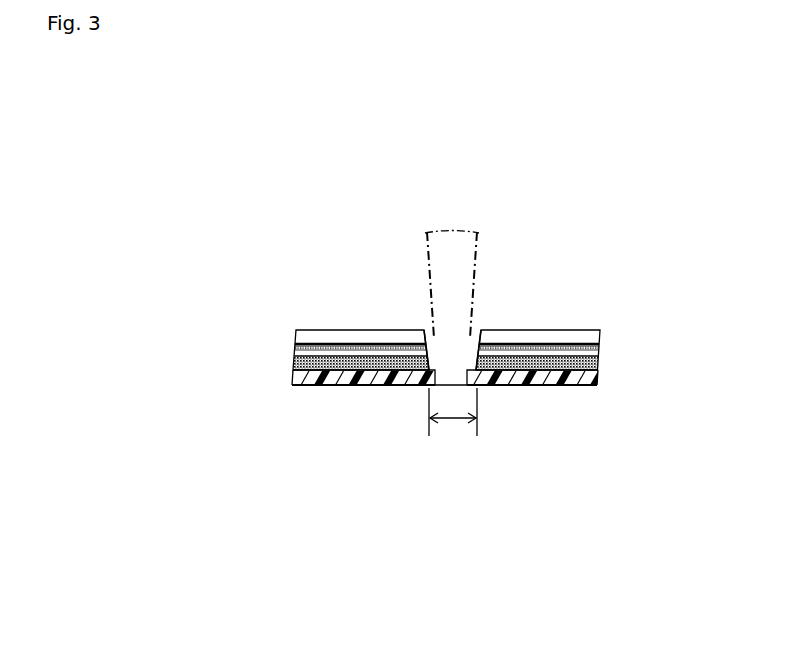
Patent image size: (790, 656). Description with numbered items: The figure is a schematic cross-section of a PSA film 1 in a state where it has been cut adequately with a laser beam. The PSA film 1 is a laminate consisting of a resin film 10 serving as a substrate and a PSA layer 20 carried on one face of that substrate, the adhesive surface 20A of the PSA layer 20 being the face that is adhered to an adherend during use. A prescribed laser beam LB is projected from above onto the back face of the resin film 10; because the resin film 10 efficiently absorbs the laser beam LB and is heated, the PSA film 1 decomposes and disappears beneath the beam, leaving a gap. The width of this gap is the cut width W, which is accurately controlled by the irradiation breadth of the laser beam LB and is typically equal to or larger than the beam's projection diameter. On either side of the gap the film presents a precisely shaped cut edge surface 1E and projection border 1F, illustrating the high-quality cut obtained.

The PSA film 1 is at (320, 301).
The cut edge surface 1E is at (433, 335).
The projection border 1F is at (480, 330).
The resin film 10 is at (600, 349).
The PSA layer 20 is at (598, 378).
The surface of PSA layer 20A is at (322, 386).
The laser beam LB is at (478, 241).
The cut width W is at (453, 421).